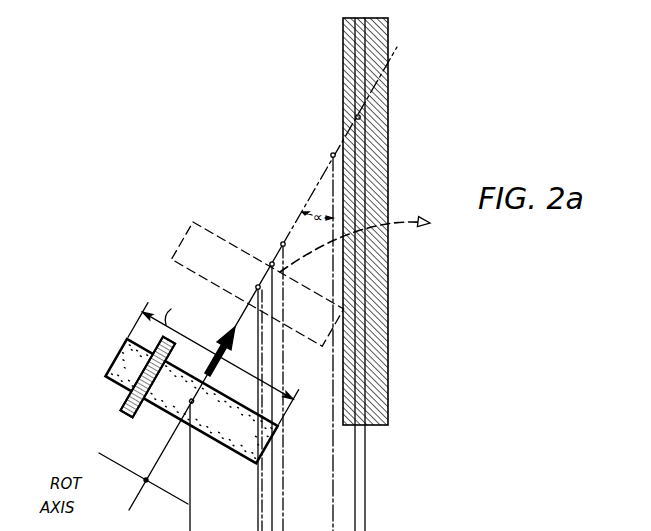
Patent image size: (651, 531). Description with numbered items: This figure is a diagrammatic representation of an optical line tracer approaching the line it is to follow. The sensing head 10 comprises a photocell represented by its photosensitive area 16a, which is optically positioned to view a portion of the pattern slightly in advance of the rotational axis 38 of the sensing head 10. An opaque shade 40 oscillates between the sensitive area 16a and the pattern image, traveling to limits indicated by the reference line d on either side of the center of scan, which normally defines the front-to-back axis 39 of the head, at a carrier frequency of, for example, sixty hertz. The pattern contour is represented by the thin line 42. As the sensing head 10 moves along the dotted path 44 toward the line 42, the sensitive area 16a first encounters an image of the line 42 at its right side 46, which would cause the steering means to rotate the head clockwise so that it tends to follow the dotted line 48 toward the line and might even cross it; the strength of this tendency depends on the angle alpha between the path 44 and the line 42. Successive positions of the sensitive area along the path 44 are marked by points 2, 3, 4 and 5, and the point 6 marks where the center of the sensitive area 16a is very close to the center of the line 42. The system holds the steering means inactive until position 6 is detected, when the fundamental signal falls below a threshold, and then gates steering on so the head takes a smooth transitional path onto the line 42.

The position along the path 2 is at (257, 283).
The position along the path 3 is at (272, 262).
The position along the path 4 is at (283, 242).
The position along the path 5 is at (333, 154).
The point along the path 6 is at (358, 116).
The sensing head 10 is at (88, 322).
The photosensitive area 16a is at (112, 363).
The rotational axis 38 is at (137, 505).
The front-to-back axis 39 is at (169, 441).
The opaque shade 40 is at (178, 346).
The thin line 42 is at (388, 161).
The path 44 is at (317, 183).
The right side 46 is at (283, 429).
The dotted line 48 is at (307, 256).